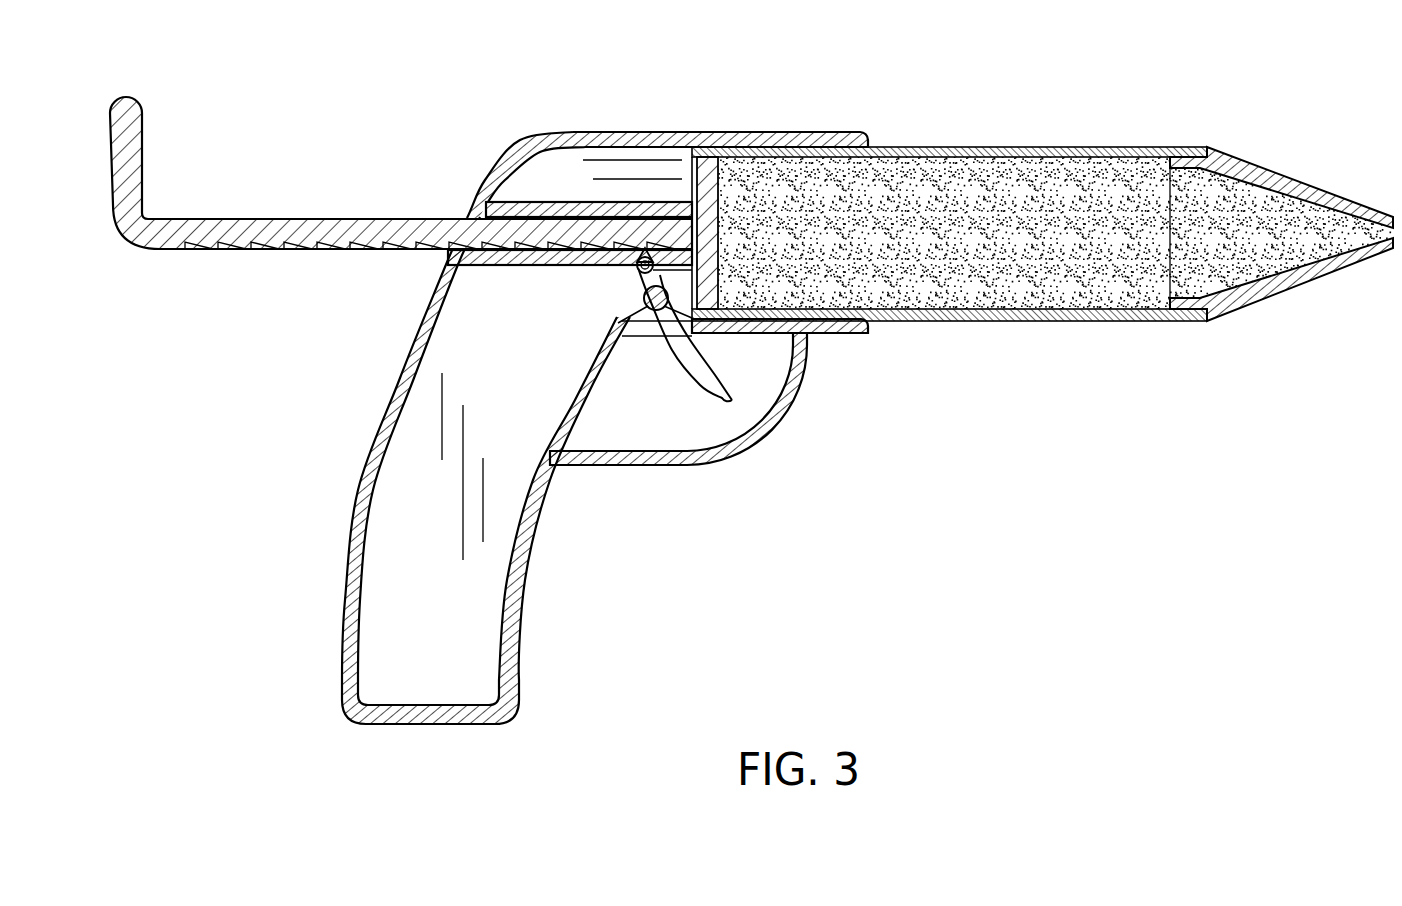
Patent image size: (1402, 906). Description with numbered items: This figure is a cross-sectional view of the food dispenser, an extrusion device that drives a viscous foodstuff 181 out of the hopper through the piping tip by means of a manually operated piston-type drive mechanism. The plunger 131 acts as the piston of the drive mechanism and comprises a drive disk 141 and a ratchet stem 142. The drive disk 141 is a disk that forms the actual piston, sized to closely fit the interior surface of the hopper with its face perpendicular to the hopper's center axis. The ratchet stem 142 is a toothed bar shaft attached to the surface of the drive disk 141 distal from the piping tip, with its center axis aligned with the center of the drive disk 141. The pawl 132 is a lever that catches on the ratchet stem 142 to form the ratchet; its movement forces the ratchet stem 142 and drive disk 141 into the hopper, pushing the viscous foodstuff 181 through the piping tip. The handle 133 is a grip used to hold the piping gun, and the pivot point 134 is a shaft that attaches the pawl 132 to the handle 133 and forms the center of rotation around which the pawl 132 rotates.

The plunger 131 is at (145, 250).
The ratchet stem 142 is at (394, 218).
The drive disk 141 is at (757, 180).
The viscous foodstuff 181 is at (1063, 200).
The pawl 132 is at (690, 405).
The handle 133 is at (620, 322).
The pivot point 134 is at (437, 725).